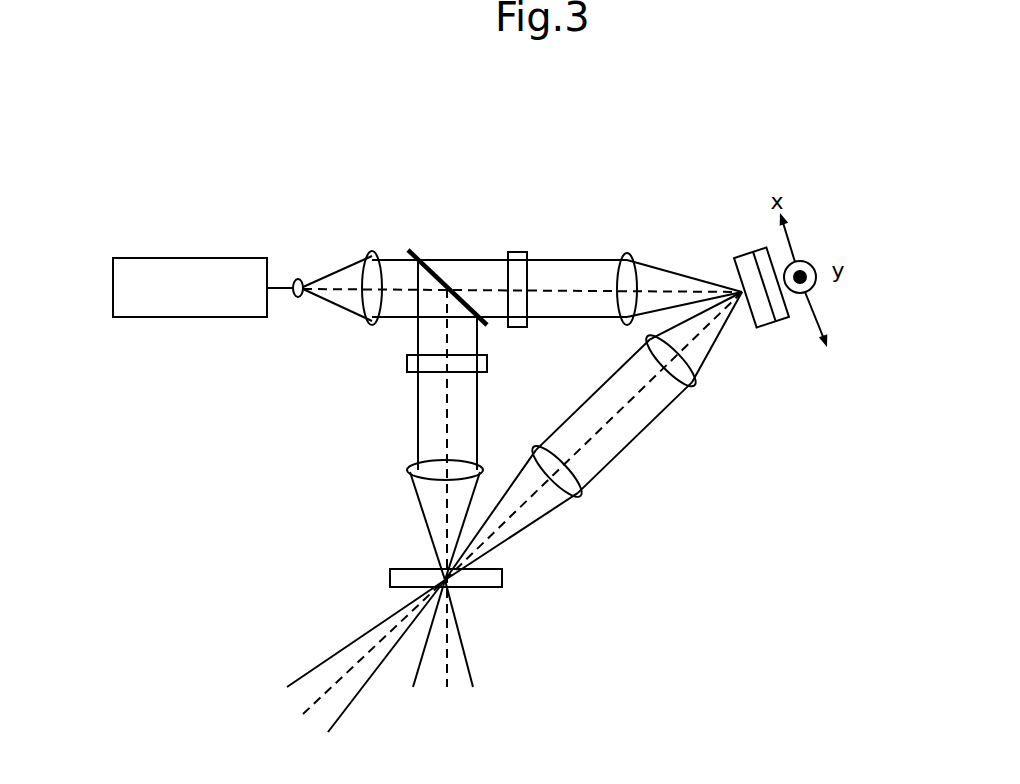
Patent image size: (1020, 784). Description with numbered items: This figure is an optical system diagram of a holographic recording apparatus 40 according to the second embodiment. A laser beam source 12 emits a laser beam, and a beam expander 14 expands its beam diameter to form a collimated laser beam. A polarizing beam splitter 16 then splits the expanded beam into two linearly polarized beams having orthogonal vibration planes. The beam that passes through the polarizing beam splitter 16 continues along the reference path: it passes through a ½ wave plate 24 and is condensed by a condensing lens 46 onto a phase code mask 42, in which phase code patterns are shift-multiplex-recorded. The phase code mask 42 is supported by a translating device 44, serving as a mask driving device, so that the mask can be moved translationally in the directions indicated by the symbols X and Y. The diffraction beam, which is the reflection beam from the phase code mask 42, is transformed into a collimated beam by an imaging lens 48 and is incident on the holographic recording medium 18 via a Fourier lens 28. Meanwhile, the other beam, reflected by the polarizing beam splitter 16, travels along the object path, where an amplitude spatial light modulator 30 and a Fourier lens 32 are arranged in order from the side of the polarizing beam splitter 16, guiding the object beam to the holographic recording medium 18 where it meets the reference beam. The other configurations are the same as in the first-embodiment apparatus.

The laser beam source 12 is at (167, 258).
The beam expander 14 is at (288, 246).
The polarizing beam splitter 16 is at (416, 250).
The holographic recording medium 18 is at (502, 578).
The ½ wave plate 24 is at (516, 252).
The Fourier lens 28 is at (583, 497).
The amplitude spatial light modulator 30 is at (407, 362).
The Fourier lens 32 is at (407, 468).
The holographic recording apparatus 40 is at (398, 150).
The phase code mask 42 is at (747, 257).
The translating device 44 is at (783, 327).
The condensing lens 46 is at (627, 255).
The imaging lens 48 is at (690, 388).